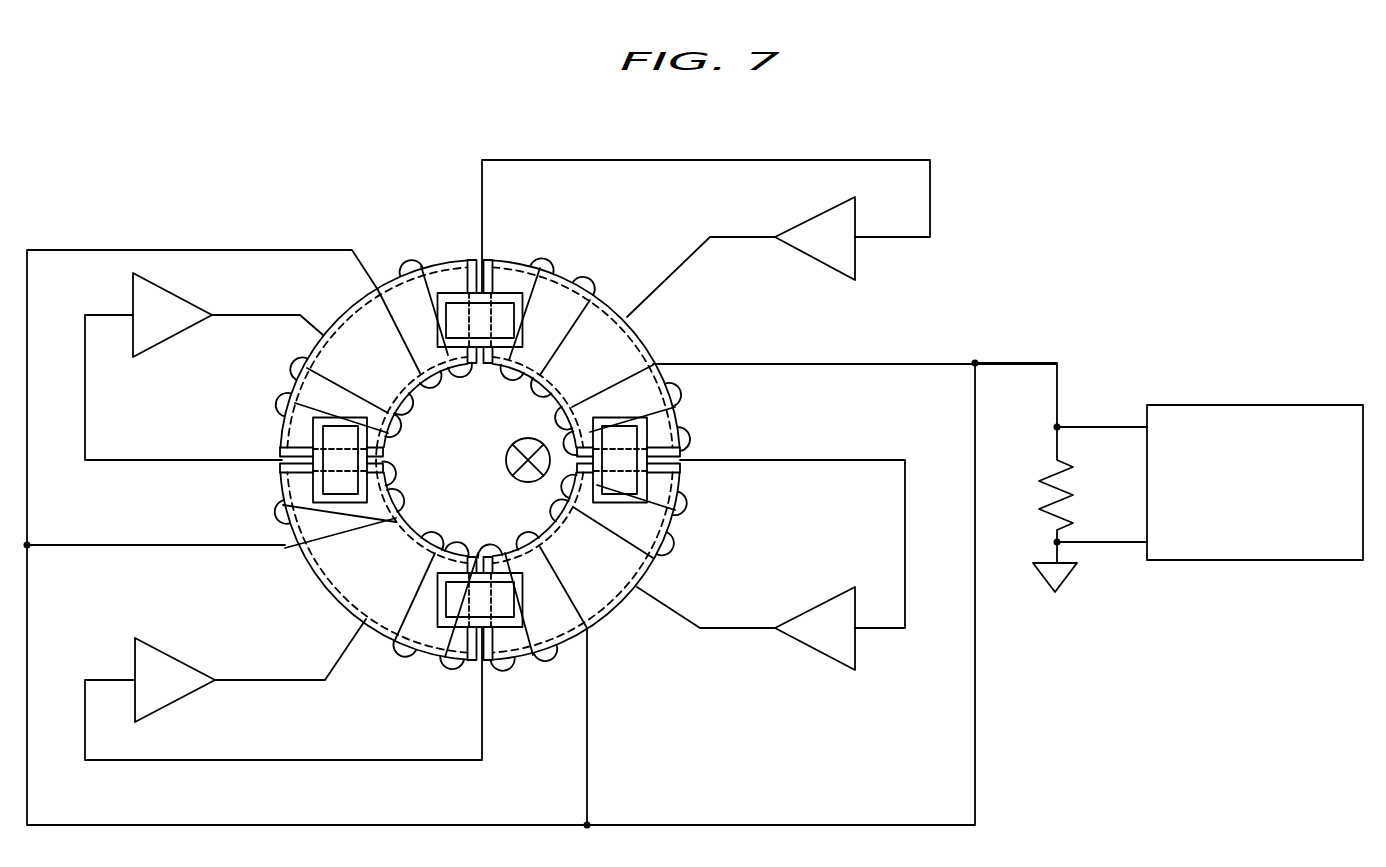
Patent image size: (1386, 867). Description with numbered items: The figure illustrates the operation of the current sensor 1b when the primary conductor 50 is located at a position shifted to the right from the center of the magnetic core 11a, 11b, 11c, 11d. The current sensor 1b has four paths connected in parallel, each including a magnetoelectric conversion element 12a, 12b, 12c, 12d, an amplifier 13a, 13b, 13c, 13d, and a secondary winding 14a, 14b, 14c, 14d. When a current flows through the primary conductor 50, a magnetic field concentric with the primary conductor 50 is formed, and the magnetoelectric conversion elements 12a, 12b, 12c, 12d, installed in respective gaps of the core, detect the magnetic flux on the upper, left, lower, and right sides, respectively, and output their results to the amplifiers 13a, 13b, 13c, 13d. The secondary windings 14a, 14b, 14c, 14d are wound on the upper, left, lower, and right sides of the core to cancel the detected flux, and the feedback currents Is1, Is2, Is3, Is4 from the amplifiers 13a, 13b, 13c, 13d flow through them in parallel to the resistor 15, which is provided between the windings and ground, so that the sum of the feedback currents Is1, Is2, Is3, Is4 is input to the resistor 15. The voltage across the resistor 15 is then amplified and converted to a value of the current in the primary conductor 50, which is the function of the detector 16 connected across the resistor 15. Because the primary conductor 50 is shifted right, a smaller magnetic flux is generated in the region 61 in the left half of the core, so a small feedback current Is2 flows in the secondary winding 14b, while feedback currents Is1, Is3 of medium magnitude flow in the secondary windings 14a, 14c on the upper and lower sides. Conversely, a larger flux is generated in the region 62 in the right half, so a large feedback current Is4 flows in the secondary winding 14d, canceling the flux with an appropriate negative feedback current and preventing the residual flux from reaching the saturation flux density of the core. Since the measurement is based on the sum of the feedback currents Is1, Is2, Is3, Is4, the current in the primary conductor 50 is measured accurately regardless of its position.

The current sensor 1b is at (1058, 253).
The magnetic core 11a is at (648, 338).
The magnetic core 11b is at (345, 310).
The magnetic core 11c is at (320, 582).
The magnetic core 11d is at (620, 608).
The magnetoelectric conversion element 12a is at (470, 317).
The magnetoelectric conversion element 12b is at (342, 447).
The magnetoelectric conversion element 12c is at (490, 602).
The magnetoelectric conversion element 12d is at (615, 440).
The amplifier 13a is at (800, 251).
The amplifier 13b is at (183, 331).
The amplifier 13c is at (193, 692).
The amplifier 13d is at (808, 646).
The secondary winding 14a is at (408, 262).
The secondary winding 14b is at (283, 513).
The secondary winding 14c is at (406, 650).
The secondary winding 14d is at (688, 505).
The resistor 15 is at (1075, 488).
The detector 16 is at (1252, 405).
The primary conductor 50 is at (505, 462).
The region 61 is at (352, 358).
The region 62 is at (603, 328).
The feedback current Is1 is at (702, 222).
The feedback current Is2 is at (218, 300).
The feedback current Is3 is at (218, 666).
The feedback current Is4 is at (707, 616).